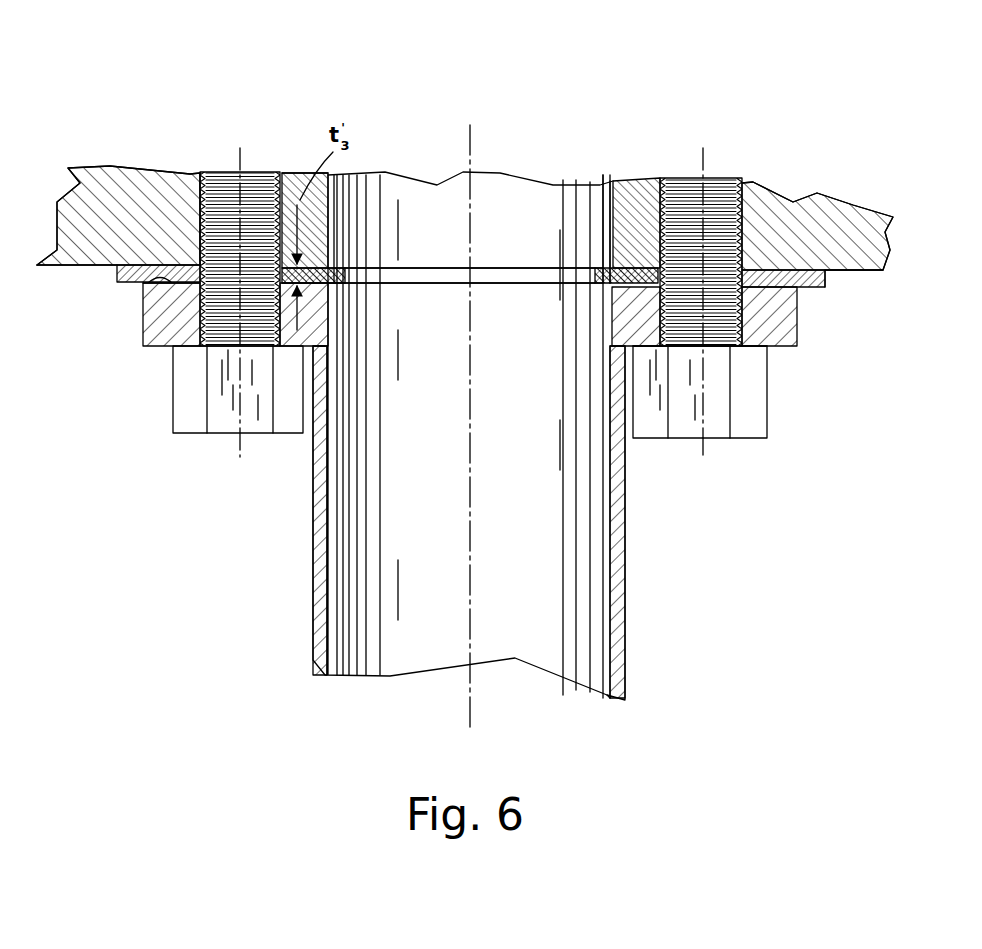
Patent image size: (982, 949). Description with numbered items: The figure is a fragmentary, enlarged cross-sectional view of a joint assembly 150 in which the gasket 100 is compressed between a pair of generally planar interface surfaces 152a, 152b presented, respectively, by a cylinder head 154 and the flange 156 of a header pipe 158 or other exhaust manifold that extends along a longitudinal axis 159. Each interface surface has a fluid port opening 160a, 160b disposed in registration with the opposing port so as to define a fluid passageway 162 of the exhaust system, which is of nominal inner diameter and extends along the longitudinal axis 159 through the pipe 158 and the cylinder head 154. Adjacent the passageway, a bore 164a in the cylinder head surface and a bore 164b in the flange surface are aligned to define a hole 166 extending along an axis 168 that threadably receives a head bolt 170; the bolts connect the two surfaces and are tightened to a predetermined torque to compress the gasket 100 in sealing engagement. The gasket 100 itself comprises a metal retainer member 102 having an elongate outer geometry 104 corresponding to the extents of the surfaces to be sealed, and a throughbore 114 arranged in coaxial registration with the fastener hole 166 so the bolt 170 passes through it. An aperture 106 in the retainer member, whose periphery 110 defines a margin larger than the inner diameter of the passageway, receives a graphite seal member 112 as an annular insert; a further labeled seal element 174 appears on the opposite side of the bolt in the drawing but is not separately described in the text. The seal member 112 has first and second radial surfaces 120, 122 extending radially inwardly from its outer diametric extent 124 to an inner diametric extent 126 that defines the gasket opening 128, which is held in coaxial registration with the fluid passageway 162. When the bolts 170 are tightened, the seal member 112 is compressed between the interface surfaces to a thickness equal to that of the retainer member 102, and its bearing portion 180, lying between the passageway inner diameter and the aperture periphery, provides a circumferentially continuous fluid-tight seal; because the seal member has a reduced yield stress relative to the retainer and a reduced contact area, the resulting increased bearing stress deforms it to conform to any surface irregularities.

The gasket 100 is at (827, 283).
The retainer member 102 is at (802, 289).
The outer geometry 104 is at (117, 274).
The aperture 106 is at (209, 266).
The periphery 110 is at (243, 266).
The seal member 112 is at (631, 265).
The throughbore 114 is at (707, 350).
The first radial surface 120 is at (322, 265).
The second radial surface 122 is at (341, 284).
The outer diametric extent 124 is at (262, 346).
The inner diametric extent 126 is at (347, 275).
The opening 128 is at (549, 267).
The joint assembly 150 is at (729, 67).
The interface surface 152a is at (57, 268).
The interface surface 152b is at (158, 348).
The cylinder head 154 is at (83, 167).
The flange 156 is at (147, 352).
The header pipe 158 is at (313, 572).
The longitudinal axis 159 is at (472, 152).
The fluid port opening 160a is at (493, 286).
The fluid port opening 160b is at (489, 266).
The fluid passageway 162 is at (527, 590).
The bore 164a is at (740, 236).
The bore 164b is at (707, 353).
The hole 166 is at (726, 262).
The axis 168 is at (700, 455).
The head bolt 170 is at (654, 443).
The gasket 174 is at (676, 286).
The bearing portion 180 is at (603, 262).